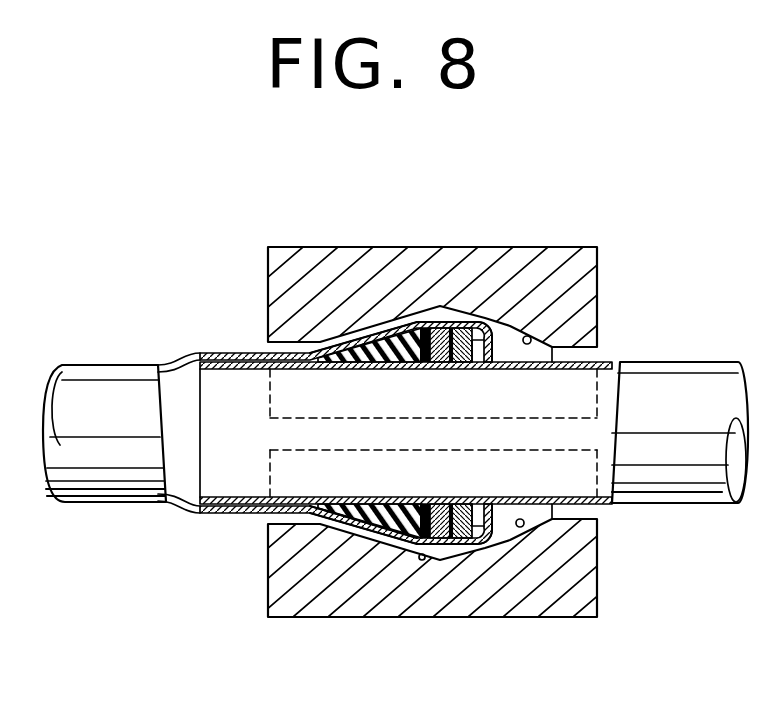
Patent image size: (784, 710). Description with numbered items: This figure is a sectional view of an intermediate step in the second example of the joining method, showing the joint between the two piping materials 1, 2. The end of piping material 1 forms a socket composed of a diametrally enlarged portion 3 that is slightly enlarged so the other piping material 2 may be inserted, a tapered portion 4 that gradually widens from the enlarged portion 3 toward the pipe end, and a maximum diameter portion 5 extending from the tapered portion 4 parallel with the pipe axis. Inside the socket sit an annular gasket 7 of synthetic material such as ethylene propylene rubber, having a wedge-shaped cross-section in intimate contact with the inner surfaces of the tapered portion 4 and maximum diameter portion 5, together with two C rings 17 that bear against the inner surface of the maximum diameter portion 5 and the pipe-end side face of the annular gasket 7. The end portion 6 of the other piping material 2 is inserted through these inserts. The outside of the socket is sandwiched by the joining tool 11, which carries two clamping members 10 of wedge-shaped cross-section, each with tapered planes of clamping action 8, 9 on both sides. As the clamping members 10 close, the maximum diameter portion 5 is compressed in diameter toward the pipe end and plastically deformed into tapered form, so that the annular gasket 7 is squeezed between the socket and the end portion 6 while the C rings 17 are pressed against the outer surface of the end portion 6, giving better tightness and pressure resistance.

The piping material 1 is at (87, 365).
The other piping material 2 is at (715, 375).
The diametrally enlarged portion 3 is at (208, 352).
The tapered portion 4 is at (360, 540).
The maximum diameter portion 5 is at (427, 318).
The end portion 6 is at (233, 352).
The annular gasket 7 is at (393, 323).
The tapered plane of clamping action 8 is at (368, 335).
The tapered plane of clamping action 9 is at (531, 338).
The clamping member 10 is at (573, 258).
The joining tool 11 is at (250, 586).
The C ring 17 is at (440, 320).